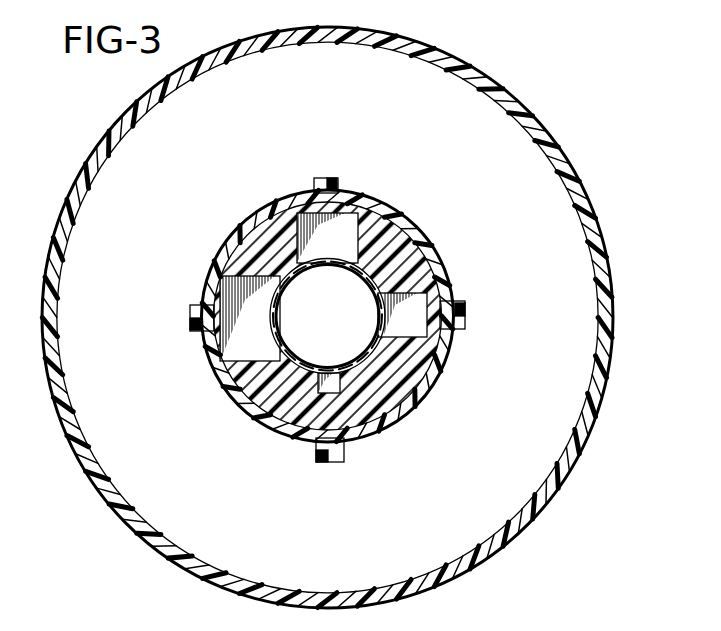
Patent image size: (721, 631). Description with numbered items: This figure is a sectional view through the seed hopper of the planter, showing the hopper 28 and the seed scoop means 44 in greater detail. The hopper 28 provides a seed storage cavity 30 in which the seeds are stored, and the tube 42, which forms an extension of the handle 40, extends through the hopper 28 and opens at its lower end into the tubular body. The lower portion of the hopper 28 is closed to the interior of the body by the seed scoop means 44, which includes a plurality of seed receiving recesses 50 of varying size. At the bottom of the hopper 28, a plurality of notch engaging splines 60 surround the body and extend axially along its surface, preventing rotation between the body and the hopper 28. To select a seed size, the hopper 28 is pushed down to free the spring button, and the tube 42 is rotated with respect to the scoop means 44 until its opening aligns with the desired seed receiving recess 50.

The hopper 28 is at (611, 272).
The seed storage cavity 30 is at (572, 374).
The handle 40 is at (353, 367).
The tube 42 is at (276, 300).
The seed scoop means 44 is at (393, 378).
The seed receiving recesses 50 is at (349, 226).
The notch engaging splines 60 is at (333, 178).